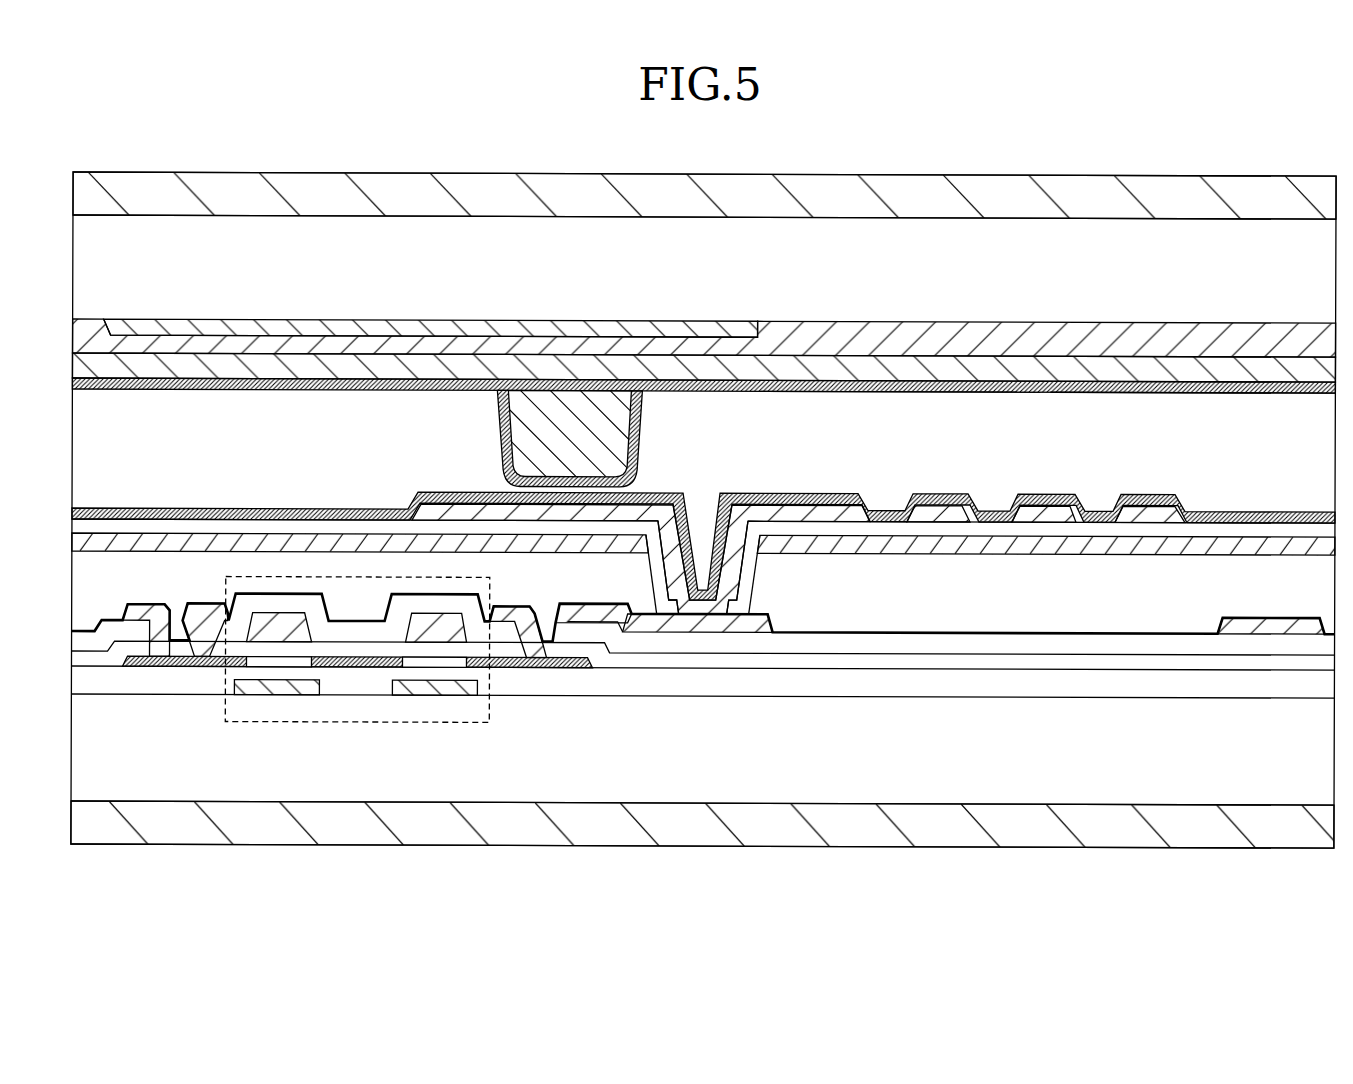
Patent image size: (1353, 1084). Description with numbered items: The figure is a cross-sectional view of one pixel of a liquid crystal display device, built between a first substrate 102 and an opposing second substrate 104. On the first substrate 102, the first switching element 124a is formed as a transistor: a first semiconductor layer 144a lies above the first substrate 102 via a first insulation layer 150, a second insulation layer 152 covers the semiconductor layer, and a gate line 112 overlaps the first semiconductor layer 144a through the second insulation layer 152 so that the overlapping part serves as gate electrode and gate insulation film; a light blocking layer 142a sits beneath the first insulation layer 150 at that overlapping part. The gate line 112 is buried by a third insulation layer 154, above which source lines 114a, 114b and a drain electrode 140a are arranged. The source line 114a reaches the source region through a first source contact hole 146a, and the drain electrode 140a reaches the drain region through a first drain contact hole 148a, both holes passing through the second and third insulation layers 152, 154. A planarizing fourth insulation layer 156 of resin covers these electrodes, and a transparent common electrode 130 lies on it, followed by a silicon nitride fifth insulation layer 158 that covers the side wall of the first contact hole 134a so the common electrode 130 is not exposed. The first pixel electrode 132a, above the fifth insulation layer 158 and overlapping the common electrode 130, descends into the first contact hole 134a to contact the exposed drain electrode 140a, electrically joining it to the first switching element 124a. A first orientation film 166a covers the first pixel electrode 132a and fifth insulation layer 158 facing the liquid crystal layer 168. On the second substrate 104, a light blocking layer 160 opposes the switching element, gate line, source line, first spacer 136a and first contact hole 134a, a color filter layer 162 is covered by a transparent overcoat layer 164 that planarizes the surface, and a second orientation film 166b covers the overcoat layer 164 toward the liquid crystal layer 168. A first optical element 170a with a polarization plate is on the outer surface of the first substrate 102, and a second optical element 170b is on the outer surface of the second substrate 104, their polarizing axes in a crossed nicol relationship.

The first substrate 102 is at (1332, 797).
The second substrate 104 is at (1332, 247).
The gate line 112 is at (447, 634).
The source line 114a is at (140, 614).
The source line 114b is at (1238, 620).
The first switching element 124a is at (424, 722).
The common electrode 130 is at (1225, 539).
The first pixel electrode 132a is at (840, 515).
The first contact hole 134a is at (700, 518).
The first spacer 136a is at (497, 430).
The drain electrode 140a is at (637, 622).
The light blocking layer 142a is at (283, 690).
The first semiconductor layer 144a is at (345, 666).
The first source contact hole 146a is at (207, 659).
The first drain contact hole 148a is at (578, 666).
The first insulation layer 150 is at (905, 685).
The second insulation layer 152 is at (972, 662).
The third insulation layer 154 is at (1030, 642).
The fourth insulation layer 156 is at (1082, 622).
The fifth insulation layer 158 is at (1100, 524).
The light blocking layer 160 is at (337, 332).
The color filter layer 162 is at (895, 398).
The overcoat layer 164 is at (290, 356).
The first orientation film 166a is at (985, 494).
The second orientation film 166b is at (206, 368).
The liquid crystal layer 168 is at (1197, 409).
The first optical element 170a is at (1217, 822).
The second optical element 170b is at (1185, 192).